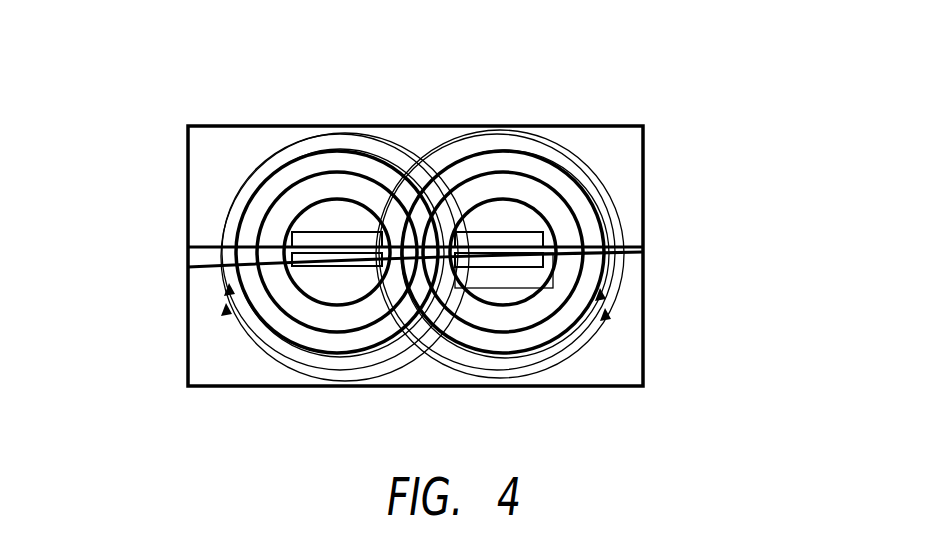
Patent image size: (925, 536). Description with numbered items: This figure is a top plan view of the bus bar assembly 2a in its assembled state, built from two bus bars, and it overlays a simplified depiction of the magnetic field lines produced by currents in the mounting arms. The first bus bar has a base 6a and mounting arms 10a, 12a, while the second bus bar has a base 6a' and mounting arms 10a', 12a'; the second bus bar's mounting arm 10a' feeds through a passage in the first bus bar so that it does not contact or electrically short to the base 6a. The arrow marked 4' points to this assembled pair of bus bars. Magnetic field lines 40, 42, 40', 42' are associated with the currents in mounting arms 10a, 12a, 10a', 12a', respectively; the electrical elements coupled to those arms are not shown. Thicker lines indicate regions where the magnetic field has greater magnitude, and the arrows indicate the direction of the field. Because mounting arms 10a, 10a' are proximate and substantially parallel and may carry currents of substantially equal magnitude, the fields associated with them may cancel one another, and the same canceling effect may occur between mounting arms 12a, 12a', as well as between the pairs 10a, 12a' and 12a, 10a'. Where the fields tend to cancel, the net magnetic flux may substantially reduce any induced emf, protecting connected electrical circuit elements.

The bus bar assembly 2a is at (541, 68).
The rotor assembly 4' is at (556, 233).
The base 6a' is at (467, 226).
The base 6a is at (463, 275).
The mounting arm 10a is at (619, 175).
The mounting arm 10a' is at (629, 313).
The mounting arm 12a is at (217, 328).
The mounting arm 12a' is at (204, 202).
The magnetic field lines 40 is at (583, 198).
The magnetic field lines 40' is at (570, 299).
The magnetic field lines 42 is at (267, 301).
The magnetic field lines 42' is at (256, 232).